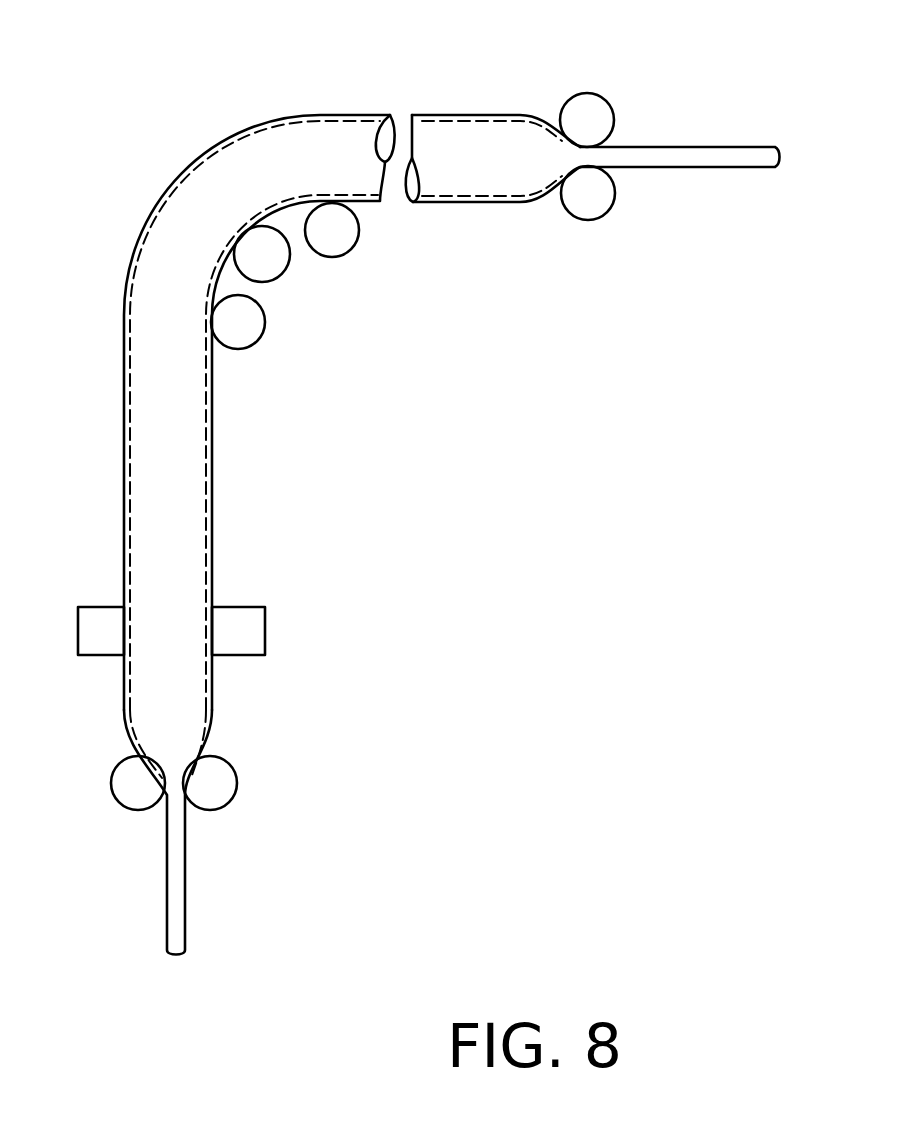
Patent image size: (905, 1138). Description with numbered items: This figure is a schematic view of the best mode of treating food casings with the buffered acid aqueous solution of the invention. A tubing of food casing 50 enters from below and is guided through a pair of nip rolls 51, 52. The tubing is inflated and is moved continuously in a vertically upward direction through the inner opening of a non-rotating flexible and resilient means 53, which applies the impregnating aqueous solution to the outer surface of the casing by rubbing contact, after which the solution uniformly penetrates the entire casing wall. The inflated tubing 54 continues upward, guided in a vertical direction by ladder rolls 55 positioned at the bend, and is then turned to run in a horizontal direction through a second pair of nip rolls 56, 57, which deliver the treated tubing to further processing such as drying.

The tubing of food casing 50 is at (187, 898).
The nip roll 51 is at (233, 776).
The nip roll 52 is at (112, 776).
The non-rotating flexible and resilient means 53 is at (267, 620).
The inflated tubing 54 is at (124, 438).
The ladder rolls 55 is at (320, 258).
The nip roll 56 is at (597, 219).
The nip roll 57 is at (593, 94).